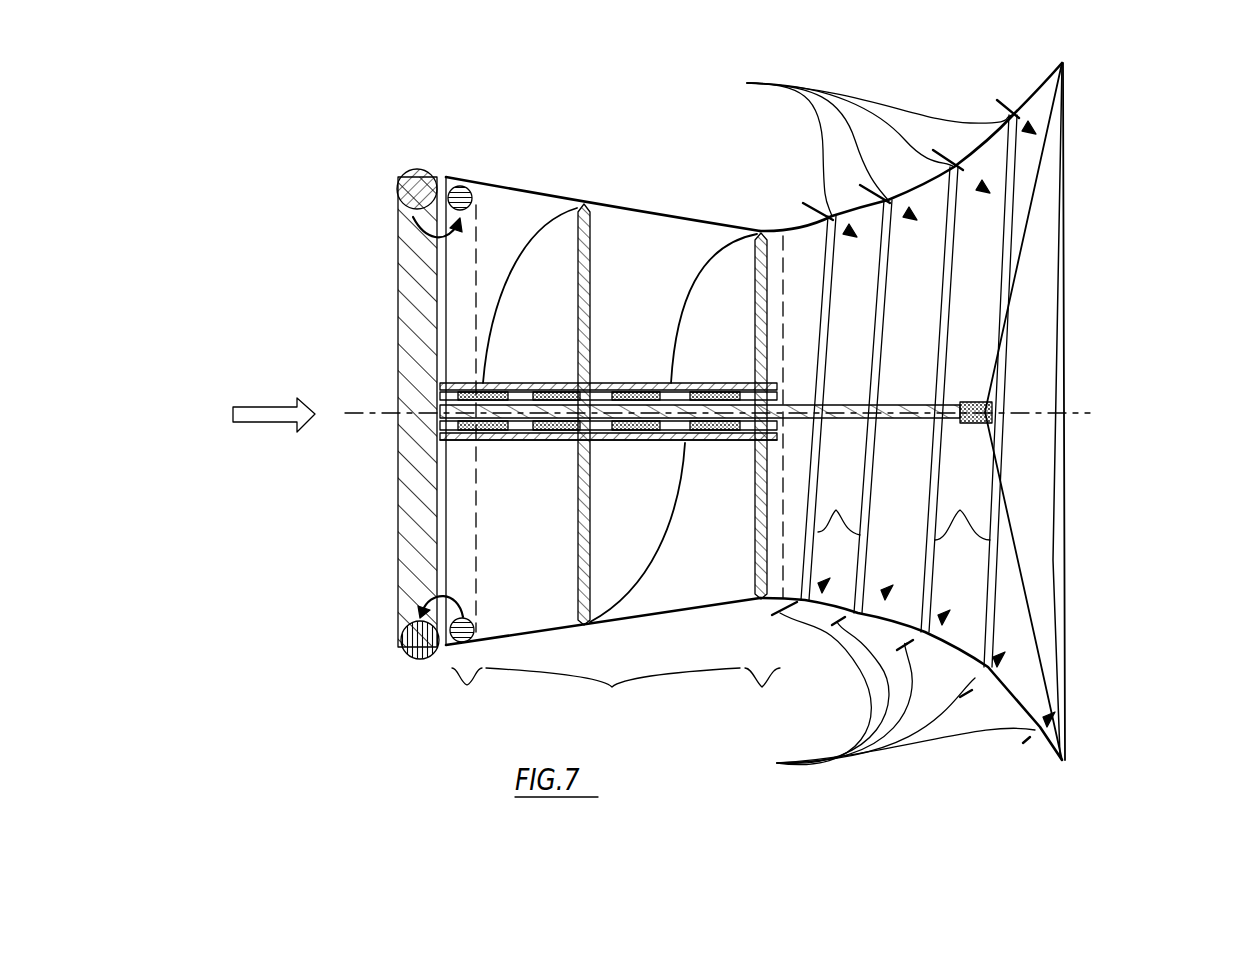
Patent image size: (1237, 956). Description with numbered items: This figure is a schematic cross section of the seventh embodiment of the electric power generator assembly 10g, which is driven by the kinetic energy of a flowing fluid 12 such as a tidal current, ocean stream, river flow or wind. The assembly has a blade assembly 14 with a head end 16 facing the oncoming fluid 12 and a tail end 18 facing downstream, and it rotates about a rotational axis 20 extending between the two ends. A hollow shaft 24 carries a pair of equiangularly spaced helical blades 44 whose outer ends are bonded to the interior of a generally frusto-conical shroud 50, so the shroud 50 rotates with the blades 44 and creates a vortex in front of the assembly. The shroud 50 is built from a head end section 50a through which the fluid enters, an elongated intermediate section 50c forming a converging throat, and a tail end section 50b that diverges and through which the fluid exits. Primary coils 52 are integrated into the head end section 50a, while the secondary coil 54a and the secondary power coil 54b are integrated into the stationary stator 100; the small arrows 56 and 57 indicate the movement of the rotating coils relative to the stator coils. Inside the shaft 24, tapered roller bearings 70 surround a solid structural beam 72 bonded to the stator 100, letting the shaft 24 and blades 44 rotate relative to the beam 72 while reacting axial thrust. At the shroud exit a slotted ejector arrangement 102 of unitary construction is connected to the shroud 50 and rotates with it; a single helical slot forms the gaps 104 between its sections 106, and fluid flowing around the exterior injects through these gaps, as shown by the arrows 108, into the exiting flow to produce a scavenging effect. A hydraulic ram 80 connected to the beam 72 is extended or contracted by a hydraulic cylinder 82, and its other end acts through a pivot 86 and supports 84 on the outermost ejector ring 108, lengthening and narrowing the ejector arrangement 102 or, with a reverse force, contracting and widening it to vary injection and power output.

The electric power generator assembly 10g is at (649, 182).
The flowing fluid 12 is at (262, 423).
The blade assembly 14 is at (642, 240).
The head end 16 is at (565, 484).
The tail end 18 is at (730, 484).
The rotational axis 20 is at (365, 415).
The shaft 24 is at (520, 383).
The helical blades 44 is at (553, 247).
The shroud 50 is at (510, 190).
The head end section 50a is at (468, 694).
The tail end section 50b is at (763, 694).
The intermediate section 50c is at (613, 694).
The primary coils 52 is at (453, 184).
The secondary coil 54a is at (410, 172).
The secondary power coil 54b is at (408, 656).
The upper pivot motion 56 is at (410, 238).
The lower pivot motion 57 is at (455, 598).
The tapered roller bearings 70 is at (642, 383).
The structural beam 72 is at (682, 383).
The hydraulic ram 80 is at (882, 405).
The hydraulic cylinder 82 is at (508, 440).
The supports 84 is at (1030, 220).
The pivot 86 is at (992, 405).
The stator 100 is at (398, 322).
The slotted ejector arrangement 102 is at (1080, 160).
The gaps 104 is at (902, 506).
The sections 106 is at (872, 346).
The arrows / ejector ring 108 is at (867, 426).